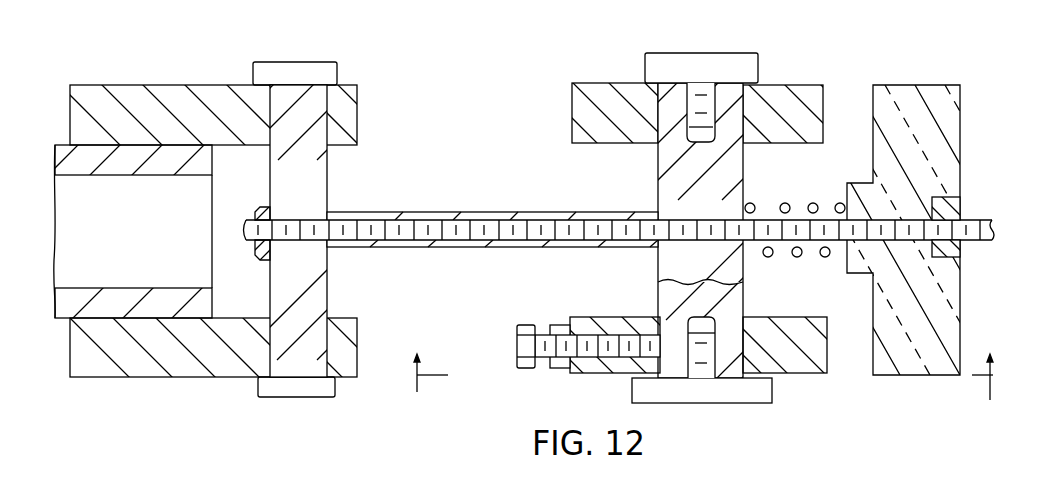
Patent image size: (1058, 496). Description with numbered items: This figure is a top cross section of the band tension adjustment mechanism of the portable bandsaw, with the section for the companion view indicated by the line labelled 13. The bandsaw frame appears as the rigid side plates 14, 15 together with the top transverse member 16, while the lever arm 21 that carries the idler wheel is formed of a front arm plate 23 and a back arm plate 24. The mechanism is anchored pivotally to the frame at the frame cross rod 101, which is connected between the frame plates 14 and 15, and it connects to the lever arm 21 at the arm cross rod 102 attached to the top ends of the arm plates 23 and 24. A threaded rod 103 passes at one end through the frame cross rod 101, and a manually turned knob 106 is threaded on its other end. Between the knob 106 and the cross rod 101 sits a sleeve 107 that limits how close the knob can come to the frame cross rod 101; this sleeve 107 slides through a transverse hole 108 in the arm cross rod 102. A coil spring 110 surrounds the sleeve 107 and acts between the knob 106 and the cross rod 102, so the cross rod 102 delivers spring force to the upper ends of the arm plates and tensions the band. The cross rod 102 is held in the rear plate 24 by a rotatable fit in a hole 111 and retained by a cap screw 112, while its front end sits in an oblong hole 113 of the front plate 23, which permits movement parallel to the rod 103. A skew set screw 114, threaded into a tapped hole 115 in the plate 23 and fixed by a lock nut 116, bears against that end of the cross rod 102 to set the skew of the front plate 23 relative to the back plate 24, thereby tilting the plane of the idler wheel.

The section line 13- 13 is at (693, 380).
The rigid side plate 14 is at (187, 377).
The rigid side plate 15 is at (178, 85).
The top transverse member 16 is at (61, 145).
The lever arm 21 is at (771, 64).
The front arm plate 23 is at (676, 394).
The back arm plate 24 is at (820, 83).
The frame cross rod 101 is at (327, 177).
The arm cross rod 102 is at (658, 178).
The threaded rod 103 is at (251, 243).
The knob 106 is at (908, 85).
The sleeve 107 is at (475, 212).
The transverse hole 108 is at (682, 237).
The coil spring 110 is at (780, 207).
The hole 111 is at (657, 104).
The cap screw 112 is at (697, 53).
The oblong hole 113 is at (754, 333).
The skew set screw 114 is at (549, 331).
The tapped hole 115 is at (598, 338).
The lock nut 116 is at (551, 370).